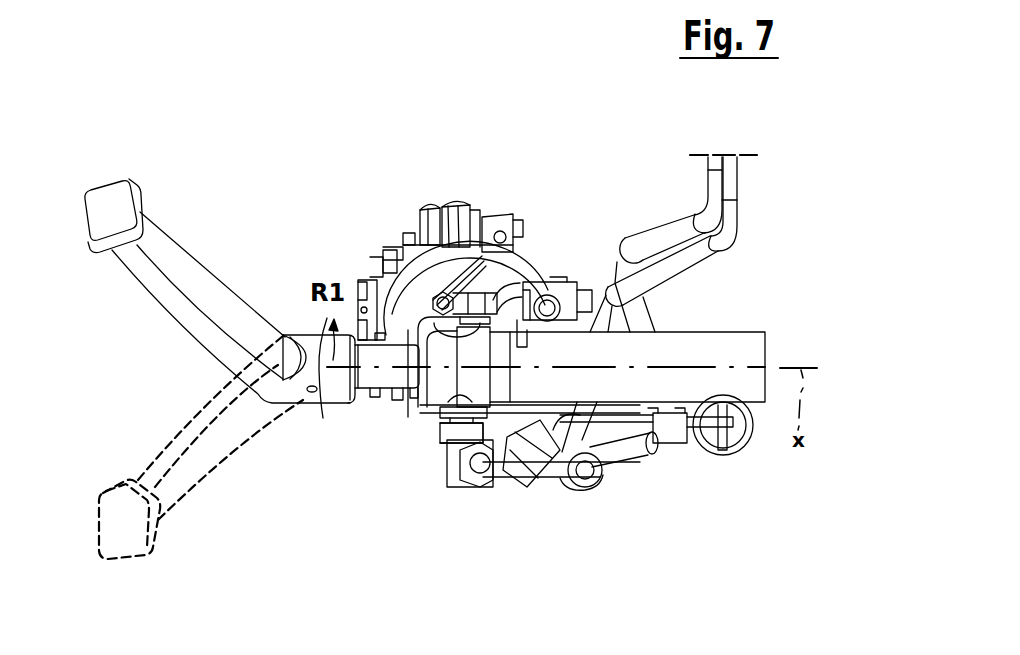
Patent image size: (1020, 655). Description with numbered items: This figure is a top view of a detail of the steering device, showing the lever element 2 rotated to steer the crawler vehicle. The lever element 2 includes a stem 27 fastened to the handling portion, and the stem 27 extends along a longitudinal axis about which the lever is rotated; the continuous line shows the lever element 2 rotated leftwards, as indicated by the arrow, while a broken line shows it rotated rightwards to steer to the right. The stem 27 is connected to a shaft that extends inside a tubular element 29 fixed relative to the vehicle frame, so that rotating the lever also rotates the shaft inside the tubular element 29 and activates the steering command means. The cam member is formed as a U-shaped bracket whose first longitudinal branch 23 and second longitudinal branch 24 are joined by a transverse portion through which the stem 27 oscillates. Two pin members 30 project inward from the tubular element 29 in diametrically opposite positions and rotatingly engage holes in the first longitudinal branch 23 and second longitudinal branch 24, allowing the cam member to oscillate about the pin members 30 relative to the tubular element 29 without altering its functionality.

The lever element 2 is at (158, 256).
The first longitudinal branch 23 is at (520, 413).
The second longitudinal branch 24 is at (540, 283).
The stem 27 is at (374, 382).
The tubular element 29 is at (730, 342).
The pin members 30 is at (438, 308).